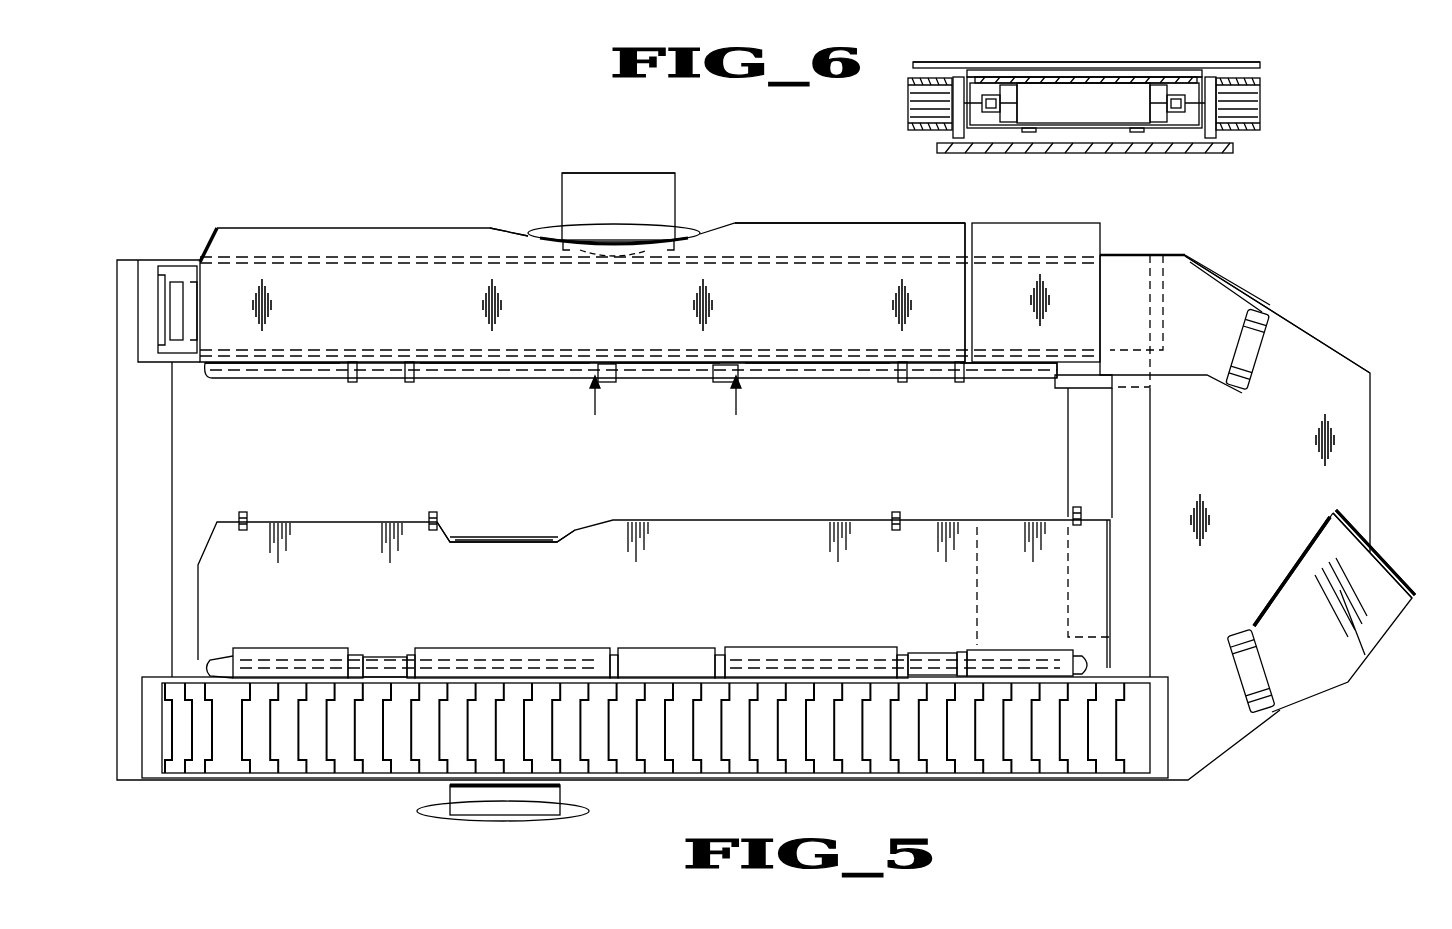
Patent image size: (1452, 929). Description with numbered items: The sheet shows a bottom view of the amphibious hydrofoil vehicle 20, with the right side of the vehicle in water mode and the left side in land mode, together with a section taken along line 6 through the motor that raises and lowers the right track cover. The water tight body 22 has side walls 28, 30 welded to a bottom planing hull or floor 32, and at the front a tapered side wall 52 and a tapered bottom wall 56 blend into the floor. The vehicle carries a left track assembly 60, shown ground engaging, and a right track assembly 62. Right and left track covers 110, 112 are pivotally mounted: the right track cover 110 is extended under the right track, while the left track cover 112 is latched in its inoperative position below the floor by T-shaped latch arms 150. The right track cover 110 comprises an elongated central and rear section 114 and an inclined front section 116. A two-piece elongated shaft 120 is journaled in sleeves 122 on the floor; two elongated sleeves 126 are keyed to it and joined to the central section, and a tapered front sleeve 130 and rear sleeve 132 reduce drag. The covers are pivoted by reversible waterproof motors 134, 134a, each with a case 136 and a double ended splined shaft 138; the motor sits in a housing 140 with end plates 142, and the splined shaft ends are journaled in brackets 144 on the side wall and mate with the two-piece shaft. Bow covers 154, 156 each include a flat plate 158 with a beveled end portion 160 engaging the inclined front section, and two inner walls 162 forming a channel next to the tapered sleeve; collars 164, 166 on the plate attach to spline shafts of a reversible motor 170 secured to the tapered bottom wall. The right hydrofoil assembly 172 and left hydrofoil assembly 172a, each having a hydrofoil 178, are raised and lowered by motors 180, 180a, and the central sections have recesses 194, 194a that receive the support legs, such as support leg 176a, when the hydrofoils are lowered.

In FIG. 5, the amphibious hydrofoil vehicle 20 is at (1152, 240).
In FIG. 5, the water tight body 22 is at (1282, 311).
In FIG. 5, the side wall 28 is at (288, 781).
In FIG. 5, the side wall 30 is at (200, 260).
In FIG. 6, the bottom planing hull or floor 32 is at (1233, 150).
In FIG. 5, the bottom planing hull or floor 32 is at (685, 459).
In FIG. 5, the tapered side wall 52 is at (1305, 335).
In FIG. 5, the tapered bottom wall 56 is at (1230, 444).
In FIG. 5, the left track assembly 60 is at (238, 780).
In FIG. 5, the right track assembly 62 is at (182, 250).
In FIG. 5, the section line 6 is at (665, 398).
In FIG. 6, the right track cover 110 is at (1265, 62).
In FIG. 5, the right track cover 110 is at (803, 221).
In FIG. 5, the left track cover 112 is at (740, 520).
In FIG. 6, the elongated central and rear section 114 is at (913, 68).
In FIG. 5, the elongated central and rear section 114 is at (645, 316).
In FIG. 5, the inclined front section 116 is at (1023, 326).
In FIG. 6, the two-piece elongated shaft 120 is at (915, 100).
In FIG. 5, the two-piece elongated shaft 120 is at (851, 380).
In FIG. 5, the sleeves 122 is at (410, 384).
In FIG. 5, the elongated sleeves 126 is at (545, 380).
In FIG. 5, the tapered front sleeve 130 is at (1015, 380).
In FIG. 5, the rear sleeve 132 is at (300, 382).
In FIG. 6, the reversible waterproof motor 134 is at (1090, 78).
In FIG. 5, the reversible waterproof motor 134 is at (668, 380).
In FIG. 5, the reversible waterproof motor 134a is at (690, 648).
In FIG. 6, the motor case 136 is at (1112, 116).
In FIG. 6, the double ended splined shaft 138 is at (1005, 128).
In FIG. 6, the housing 140 is at (1035, 70).
In FIG. 6, the end plates 142 is at (985, 78).
In FIG. 6, the brackets 144 is at (958, 135).
In FIG. 5, the T-shaped latch arms 150 is at (431, 516).
In FIG. 5, the bow cover 154 is at (1200, 264).
In FIG. 5, the bow cover 156 is at (1330, 512).
In FIG. 5, the flat plate 158 is at (1216, 332).
In FIG. 5, the beveled end portion 160 is at (1100, 262).
In FIG. 5, the inner walls 162 is at (1318, 530).
In FIG. 5, the collar 164 is at (1260, 315).
In FIG. 5, the collar 166 is at (1240, 387).
In FIG. 5, the reversible motor 170 is at (1250, 348).
In FIG. 5, the right hydrofoil assembly 172 is at (678, 176).
In FIG. 5, the left hydrofoil assembly 172a is at (447, 793).
In FIG. 5, the support leg 176a is at (565, 791).
In FIG. 5, the hydrofoil 178 is at (625, 162).
In FIG. 5, the motor 180 is at (657, 226).
In FIG. 5, the motor 180a is at (505, 820).
In FIG. 5, the recess 194 is at (505, 228).
In FIG. 5, the recess 194a is at (585, 522).